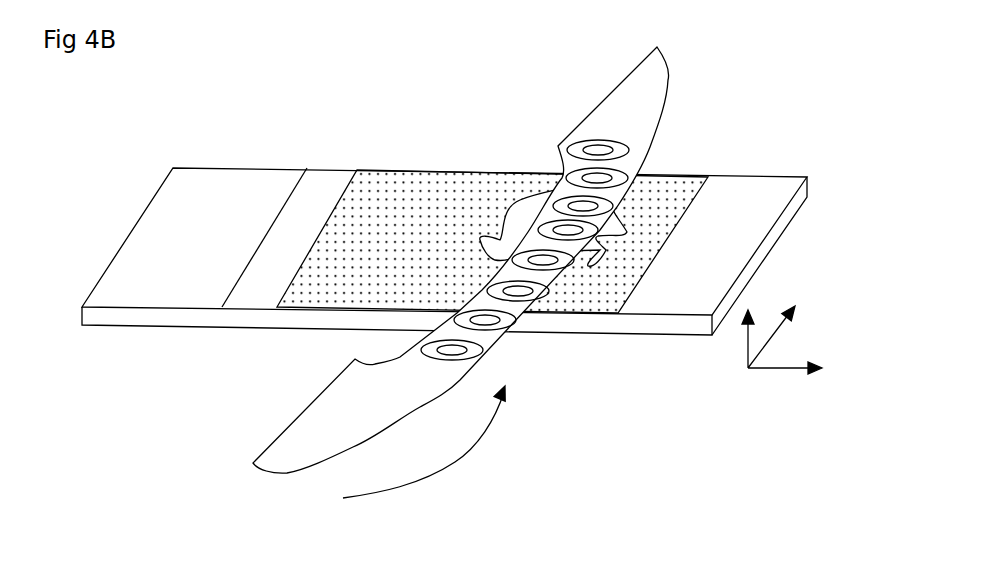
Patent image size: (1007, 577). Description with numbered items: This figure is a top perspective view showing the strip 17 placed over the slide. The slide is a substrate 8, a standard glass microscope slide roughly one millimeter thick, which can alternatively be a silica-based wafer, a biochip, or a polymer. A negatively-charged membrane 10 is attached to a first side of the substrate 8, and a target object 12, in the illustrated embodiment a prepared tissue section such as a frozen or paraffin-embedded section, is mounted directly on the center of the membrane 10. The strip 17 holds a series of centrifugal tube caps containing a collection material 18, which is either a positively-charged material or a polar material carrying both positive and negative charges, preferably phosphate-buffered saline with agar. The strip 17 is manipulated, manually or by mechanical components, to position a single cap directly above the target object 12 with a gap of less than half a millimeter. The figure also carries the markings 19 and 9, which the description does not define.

The substrate 8 is at (231, 191).
The negatively-charged membrane 10 is at (403, 188).
The target object 12 is at (538, 194).
The strip 17 is at (294, 426).
The collection material 18 is at (513, 340).
The rotation direction 19 is at (473, 476).
The coordinate system 9 is at (728, 387).